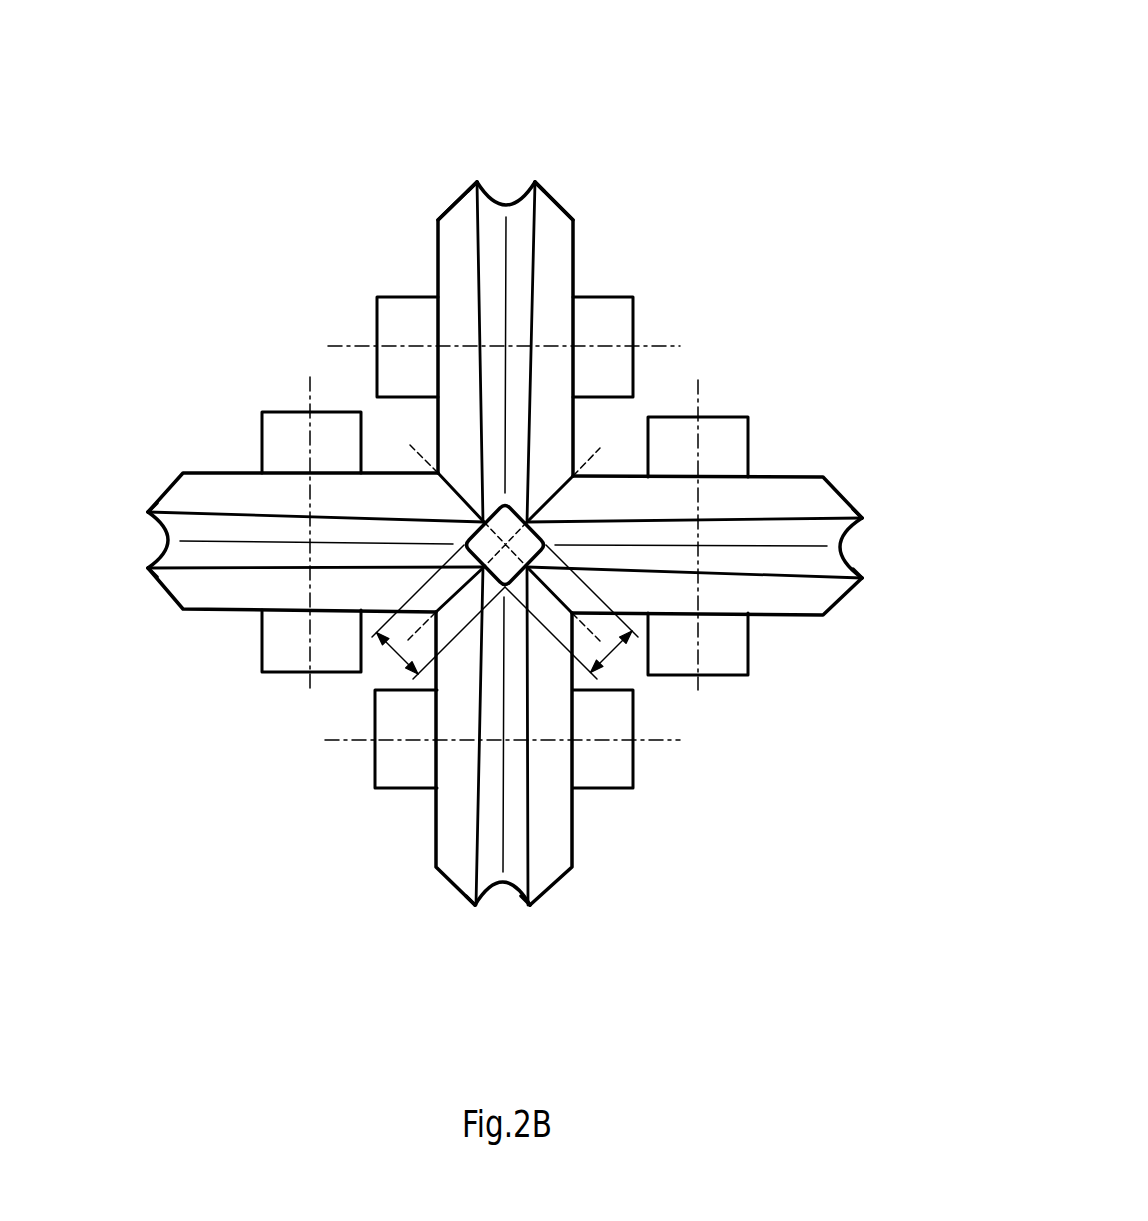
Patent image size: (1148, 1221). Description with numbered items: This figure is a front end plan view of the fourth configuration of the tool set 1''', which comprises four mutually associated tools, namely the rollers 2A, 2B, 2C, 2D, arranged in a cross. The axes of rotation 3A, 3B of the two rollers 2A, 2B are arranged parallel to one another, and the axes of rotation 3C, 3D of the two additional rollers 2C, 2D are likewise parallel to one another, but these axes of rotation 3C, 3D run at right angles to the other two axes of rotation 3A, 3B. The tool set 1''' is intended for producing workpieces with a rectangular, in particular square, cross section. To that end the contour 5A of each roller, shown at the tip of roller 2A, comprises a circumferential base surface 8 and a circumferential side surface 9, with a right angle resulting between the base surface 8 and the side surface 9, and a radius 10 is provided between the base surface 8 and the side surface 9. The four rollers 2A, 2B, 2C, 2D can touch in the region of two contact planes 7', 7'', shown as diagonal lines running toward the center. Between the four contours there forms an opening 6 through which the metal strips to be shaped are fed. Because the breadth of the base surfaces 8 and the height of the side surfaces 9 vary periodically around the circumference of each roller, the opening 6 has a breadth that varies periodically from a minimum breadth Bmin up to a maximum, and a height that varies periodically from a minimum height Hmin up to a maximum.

The tool set 1''' is at (211, 41).
The roller 2A is at (395, 230).
The roller 2B is at (393, 855).
The roller 2C is at (801, 447).
The roller 2D is at (210, 438).
The axis of rotation 3A is at (343, 345).
The axis of rotation 3B is at (342, 742).
The axis of rotation 3C is at (700, 391).
The axis of rotation 3D is at (310, 390).
The contour 5A is at (516, 150).
The opening 6 is at (523, 543).
The contact plane 7' is at (405, 439).
The contact plane 7'' is at (610, 441).
The base surface 8 is at (488, 183).
The side surface 9 is at (522, 183).
The radius 10 is at (507, 197).
The minimum height Hmin is at (392, 652).
The minimum breadth Bmin is at (615, 648).